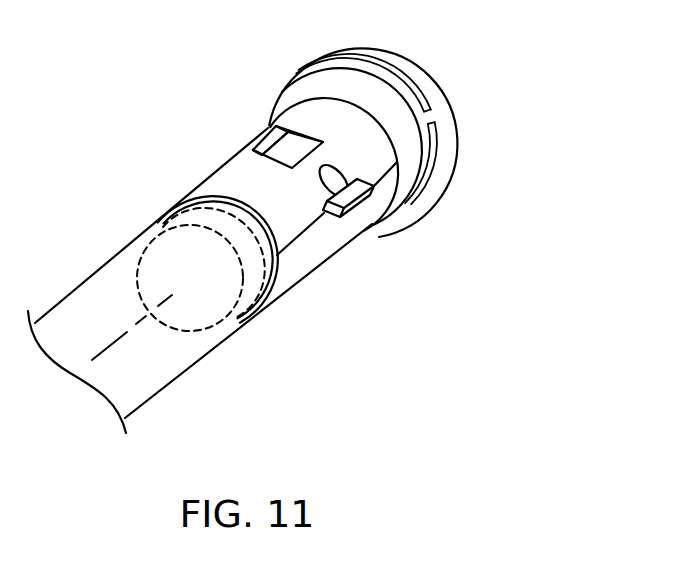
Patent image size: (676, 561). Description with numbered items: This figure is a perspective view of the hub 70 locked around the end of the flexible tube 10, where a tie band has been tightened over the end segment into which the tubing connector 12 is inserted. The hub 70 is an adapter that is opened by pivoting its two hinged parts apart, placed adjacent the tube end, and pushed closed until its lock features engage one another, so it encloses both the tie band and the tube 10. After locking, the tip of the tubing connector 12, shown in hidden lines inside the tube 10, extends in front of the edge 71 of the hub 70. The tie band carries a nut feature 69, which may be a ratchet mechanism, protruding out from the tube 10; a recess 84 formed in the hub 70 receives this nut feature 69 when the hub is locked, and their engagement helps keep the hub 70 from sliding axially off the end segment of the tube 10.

The tube 10 is at (190, 365).
The tubing connector 12 is at (130, 258).
The nut feature 69 is at (287, 150).
The hub 70 is at (308, 69).
The edge 71 is at (170, 203).
The recess 84 is at (253, 149).